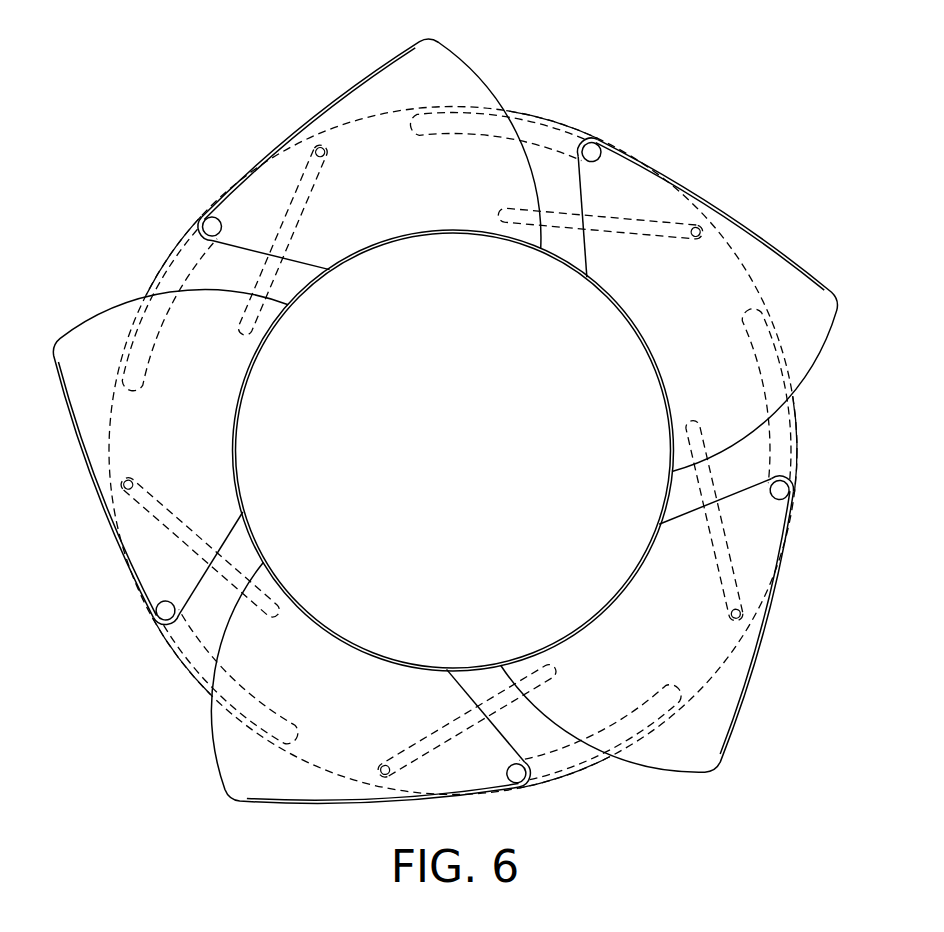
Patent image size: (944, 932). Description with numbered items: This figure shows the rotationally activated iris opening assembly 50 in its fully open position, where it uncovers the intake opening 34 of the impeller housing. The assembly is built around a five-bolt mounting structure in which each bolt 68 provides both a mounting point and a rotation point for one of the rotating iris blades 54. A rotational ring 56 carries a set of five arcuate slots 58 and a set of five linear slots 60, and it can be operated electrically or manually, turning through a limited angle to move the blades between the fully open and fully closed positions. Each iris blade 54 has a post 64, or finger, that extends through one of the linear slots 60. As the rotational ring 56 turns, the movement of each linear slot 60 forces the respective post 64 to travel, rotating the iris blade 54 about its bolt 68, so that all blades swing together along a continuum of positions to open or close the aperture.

The iris opening assembly 50 is at (437, 423).
The intake opening 34 is at (560, 565).
The iris blades 54 is at (460, 50).
The rotational ring 56 is at (557, 259).
The arcuate slots 58 is at (174, 251).
The linear slots 60 is at (303, 218).
The posts 64 is at (326, 155).
The bolts 68 is at (208, 216).